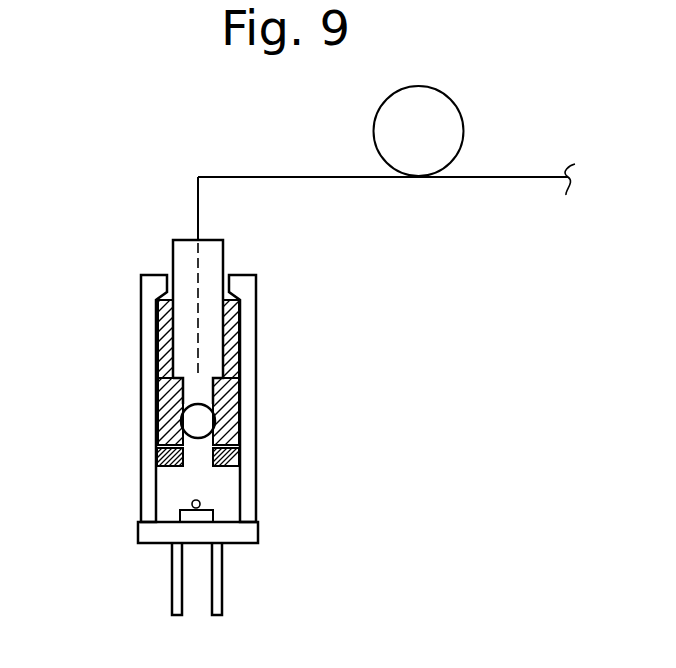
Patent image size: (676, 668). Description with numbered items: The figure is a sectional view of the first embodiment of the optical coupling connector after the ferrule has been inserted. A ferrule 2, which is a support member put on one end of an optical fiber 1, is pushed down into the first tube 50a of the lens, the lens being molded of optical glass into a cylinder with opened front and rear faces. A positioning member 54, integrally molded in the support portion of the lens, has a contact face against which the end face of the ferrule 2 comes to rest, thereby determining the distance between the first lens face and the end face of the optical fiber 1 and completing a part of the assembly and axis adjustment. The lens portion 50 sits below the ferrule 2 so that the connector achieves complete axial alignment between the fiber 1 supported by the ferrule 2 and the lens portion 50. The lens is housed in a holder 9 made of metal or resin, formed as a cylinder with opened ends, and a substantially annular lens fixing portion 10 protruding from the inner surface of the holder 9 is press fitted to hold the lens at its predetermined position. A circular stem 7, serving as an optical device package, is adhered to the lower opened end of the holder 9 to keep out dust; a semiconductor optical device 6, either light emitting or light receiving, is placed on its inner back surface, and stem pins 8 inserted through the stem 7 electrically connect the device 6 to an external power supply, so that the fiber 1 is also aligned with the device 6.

The optical fiber 1 is at (388, 178).
The ferrule 2 is at (223, 248).
The semiconductor optical device 6 is at (213, 512).
The stem 7 is at (163, 530).
The stem pins 8 is at (172, 615).
The holder 9 is at (143, 283).
The lens fixing portion 10 is at (158, 460).
The lens portion 50 is at (200, 422).
The first tube 50a is at (157, 342).
The positioning member 54 is at (160, 390).